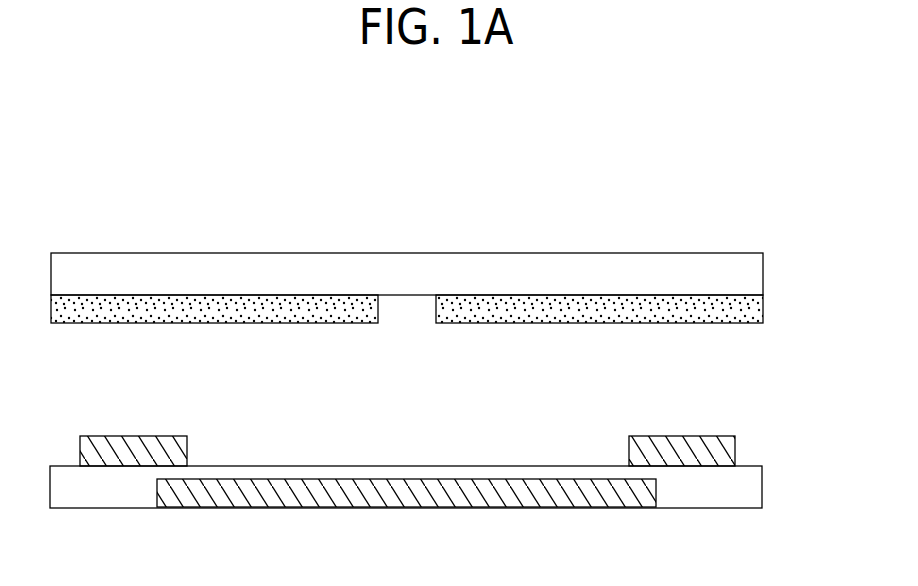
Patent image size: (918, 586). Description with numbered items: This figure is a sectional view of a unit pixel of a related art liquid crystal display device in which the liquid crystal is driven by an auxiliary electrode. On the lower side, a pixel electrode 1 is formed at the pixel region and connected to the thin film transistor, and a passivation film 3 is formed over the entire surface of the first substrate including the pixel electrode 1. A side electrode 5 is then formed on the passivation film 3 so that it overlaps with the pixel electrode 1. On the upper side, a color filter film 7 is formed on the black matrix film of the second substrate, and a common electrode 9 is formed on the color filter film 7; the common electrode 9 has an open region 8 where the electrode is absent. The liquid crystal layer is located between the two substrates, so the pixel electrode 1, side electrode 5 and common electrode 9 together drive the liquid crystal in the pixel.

The pixel electrode 1 is at (518, 500).
The passivation film 3 is at (757, 485).
The side electrode 5 is at (85, 452).
The color filter film 7 is at (757, 272).
The open region 8 is at (413, 310).
The common electrode 9 is at (330, 323).